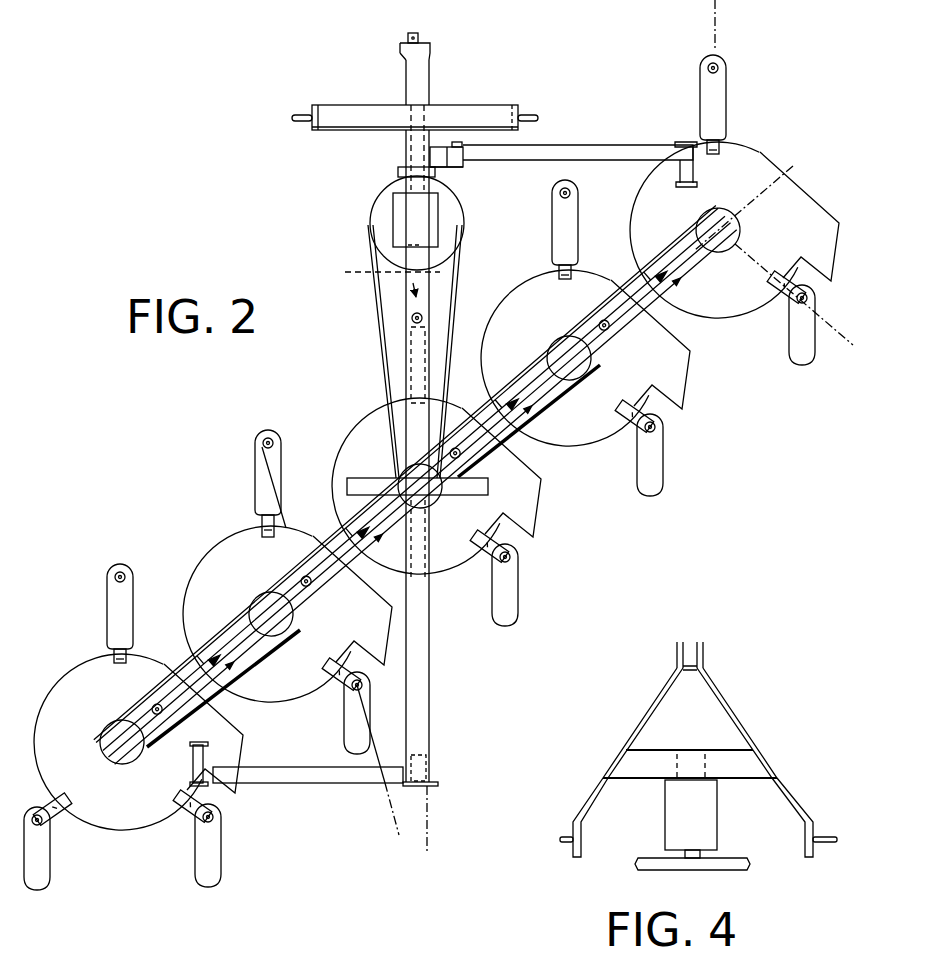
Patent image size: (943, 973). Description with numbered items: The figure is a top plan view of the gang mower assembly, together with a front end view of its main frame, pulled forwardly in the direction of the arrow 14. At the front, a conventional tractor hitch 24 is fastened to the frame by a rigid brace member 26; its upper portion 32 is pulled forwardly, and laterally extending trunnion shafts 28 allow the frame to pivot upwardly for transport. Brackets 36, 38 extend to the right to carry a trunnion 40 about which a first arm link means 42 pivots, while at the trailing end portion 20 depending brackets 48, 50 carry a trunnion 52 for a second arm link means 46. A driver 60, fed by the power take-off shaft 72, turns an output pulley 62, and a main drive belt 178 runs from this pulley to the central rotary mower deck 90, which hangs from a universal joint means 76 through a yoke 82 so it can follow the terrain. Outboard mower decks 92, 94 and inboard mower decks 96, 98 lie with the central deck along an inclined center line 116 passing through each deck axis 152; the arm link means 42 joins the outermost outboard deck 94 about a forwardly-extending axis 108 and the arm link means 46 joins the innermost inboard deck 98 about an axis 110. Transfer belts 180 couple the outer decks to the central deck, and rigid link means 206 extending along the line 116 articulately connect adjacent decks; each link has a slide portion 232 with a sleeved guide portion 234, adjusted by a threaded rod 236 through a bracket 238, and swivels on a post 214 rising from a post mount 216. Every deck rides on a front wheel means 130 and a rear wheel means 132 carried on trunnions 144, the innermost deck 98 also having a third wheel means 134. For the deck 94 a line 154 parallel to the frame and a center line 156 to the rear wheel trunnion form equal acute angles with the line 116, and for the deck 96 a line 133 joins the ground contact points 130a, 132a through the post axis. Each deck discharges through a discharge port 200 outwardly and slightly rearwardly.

In FIG. 2, the arrow 14 is at (416, 3).
In FIG. 2, the trailing end portion 20 is at (431, 736).
In FIG. 2, the tractor hitch 24 is at (502, 97).
In FIG. 4, the tractor hitch 24 is at (748, 711).
In FIG. 4, the rigid brace member 26 is at (665, 760).
In FIG. 2, the trunnion shafts 28 is at (302, 116).
In FIG. 4, the trunnion shafts 28 is at (553, 846).
In FIG. 4, the upper portion of the hitch 32 is at (693, 640).
In FIG. 2, the bracket 36 is at (437, 146).
In FIG. 2, the bracket 38 is at (453, 169).
In FIG. 2, the trunnion 40 is at (463, 165).
In FIG. 2, the first arm link means 42 is at (600, 147).
In FIG. 2, the second arm link means 46 is at (331, 785).
In FIG. 2, the depending bracket 48 is at (440, 786).
In FIG. 2, the depending bracket 50 is at (433, 766).
In FIG. 2, the trunnion 52 is at (432, 831).
In FIG. 2, the driver 60 is at (394, 214).
In FIG. 4, the driver 60 is at (717, 815).
In FIG. 2, the output pulley 62 is at (456, 227).
In FIG. 4, the output pulley 62 is at (735, 856).
In FIG. 2, the shaft 72 is at (421, 72).
In FIG. 2, the universal joint means 76 is at (368, 463).
In FIG. 2, the yoke 82 is at (348, 482).
In FIG. 2, the central rotary mower deck 90 is at (416, 486).
In FIG. 2, the outboard mower deck 92 is at (565, 358).
In FIG. 2, the outermost outboard mower deck 94 is at (714, 230).
In FIG. 2, the inboard mower deck 96 is at (267, 614).
In FIG. 2, the innermost inboard mower deck 98 is at (118, 742).
In FIG. 2, the forwardly-extending axis 108 is at (688, 170).
In FIG. 2, the forwardly-extending axis 110 is at (211, 736).
In FIG. 2, the center line 116 is at (789, 163).
In FIG. 2, the front wheel means 130 is at (733, 112).
In FIG. 2, the ground contact point 130a is at (262, 470).
In FIG. 2, the rear wheel means 132 is at (801, 372).
In FIG. 2, the ground contact point 132a is at (352, 690).
In FIG. 2, the line 133 is at (398, 840).
In FIG. 2, the wheel means 134 is at (51, 896).
In FIG. 2, the trunnion 144 is at (721, 70).
In FIG. 2, the axis 152 is at (729, 236).
In FIG. 2, the line 154 is at (711, 8).
In FIG. 2, the center line 156 is at (853, 345).
In FIG. 2, the main drive belt 178 is at (378, 300).
In FIG. 2, the transfer belts 180 is at (701, 289).
In FIG. 2, the discharge port 200 is at (840, 225).
In FIG. 2, the rigid link means 206 is at (661, 265).
In FIG. 2, the post 214 is at (602, 322).
In FIG. 2, the post mount 216 is at (615, 362).
In FIG. 2, the slide portion 232 is at (626, 279).
In FIG. 2, the guide portion 234 is at (649, 330).
In FIG. 2, the threaded rod 236 is at (526, 471).
In FIG. 2, the bracket 238 is at (428, 601).